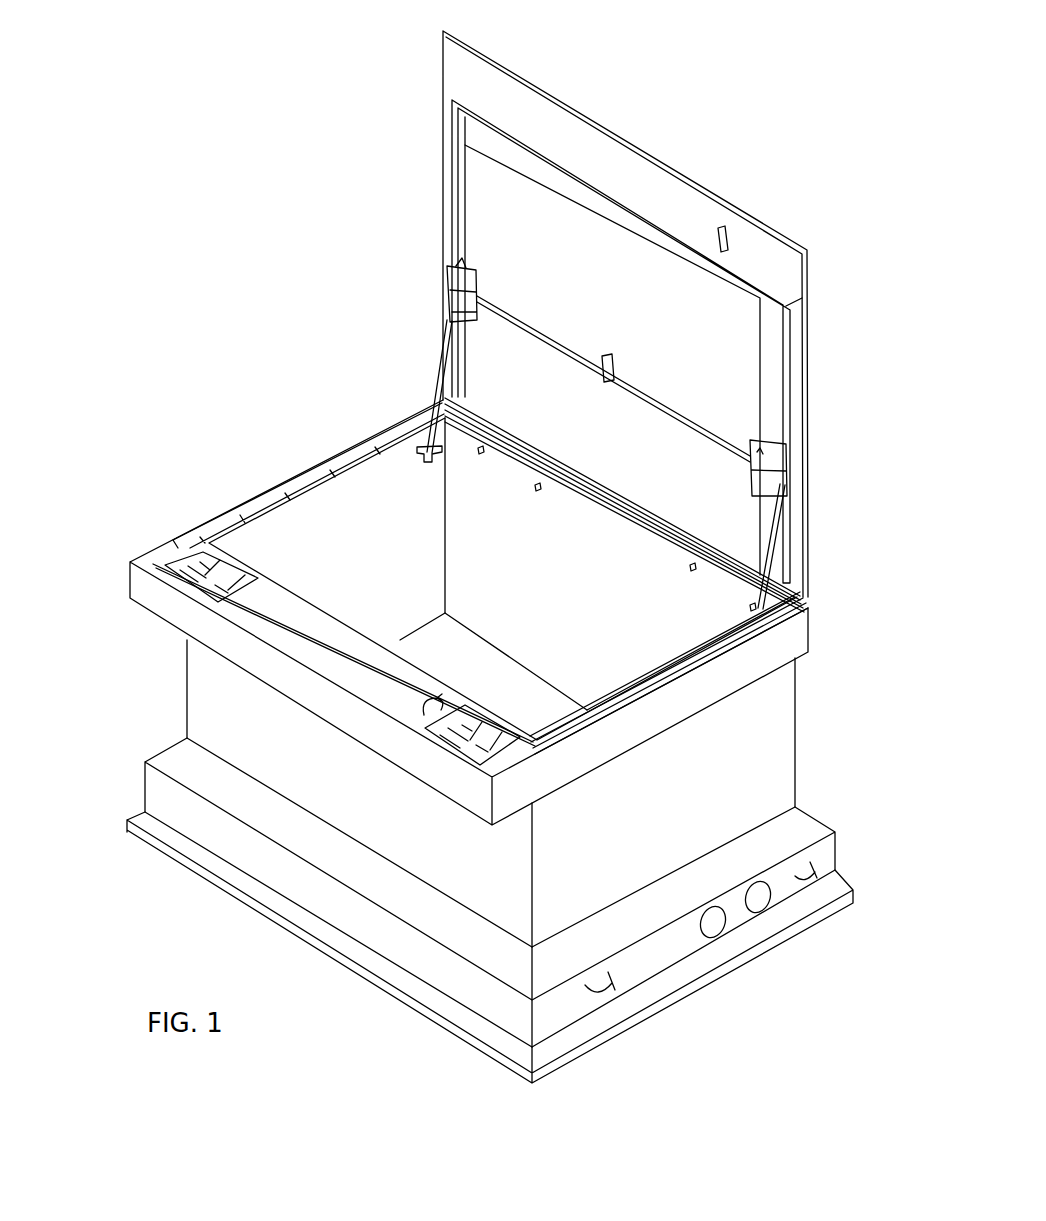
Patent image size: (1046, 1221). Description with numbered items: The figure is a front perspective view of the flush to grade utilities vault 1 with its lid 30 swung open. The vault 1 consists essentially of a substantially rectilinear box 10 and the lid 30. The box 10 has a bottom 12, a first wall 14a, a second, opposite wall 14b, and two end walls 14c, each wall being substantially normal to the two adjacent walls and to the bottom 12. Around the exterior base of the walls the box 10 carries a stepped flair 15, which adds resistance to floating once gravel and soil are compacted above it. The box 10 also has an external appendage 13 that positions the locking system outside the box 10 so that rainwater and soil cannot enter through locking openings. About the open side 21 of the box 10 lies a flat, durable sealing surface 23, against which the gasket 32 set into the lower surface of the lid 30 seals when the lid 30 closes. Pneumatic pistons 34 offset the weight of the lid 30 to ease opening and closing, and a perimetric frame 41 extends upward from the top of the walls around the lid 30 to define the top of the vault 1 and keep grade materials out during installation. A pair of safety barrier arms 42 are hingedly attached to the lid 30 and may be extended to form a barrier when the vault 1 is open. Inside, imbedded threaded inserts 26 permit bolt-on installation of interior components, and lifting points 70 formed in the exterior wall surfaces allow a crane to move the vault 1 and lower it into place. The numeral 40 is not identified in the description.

The flush to grade utilities vault 1 is at (190, 288).
The box 10 is at (93, 705).
The bottom 12 is at (507, 681).
The external appendage 13 is at (156, 533).
The first wall 14a is at (490, 843).
The second, opposite wall 14b is at (600, 564).
The end walls 14c is at (570, 747).
The stepped flair 15 is at (192, 805).
The open side 21 is at (309, 436).
The sealing surface 23 is at (708, 650).
The threaded inserts 26 is at (478, 441).
The lid 30 is at (370, 167).
The gasket 32 is at (793, 410).
The pneumatic pistons 34 is at (770, 552).
The latch hook 40 is at (420, 708).
The perimetric frame 41 is at (783, 637).
The safety barrier arms 42 is at (507, 307).
The lifting points 70 is at (817, 867).